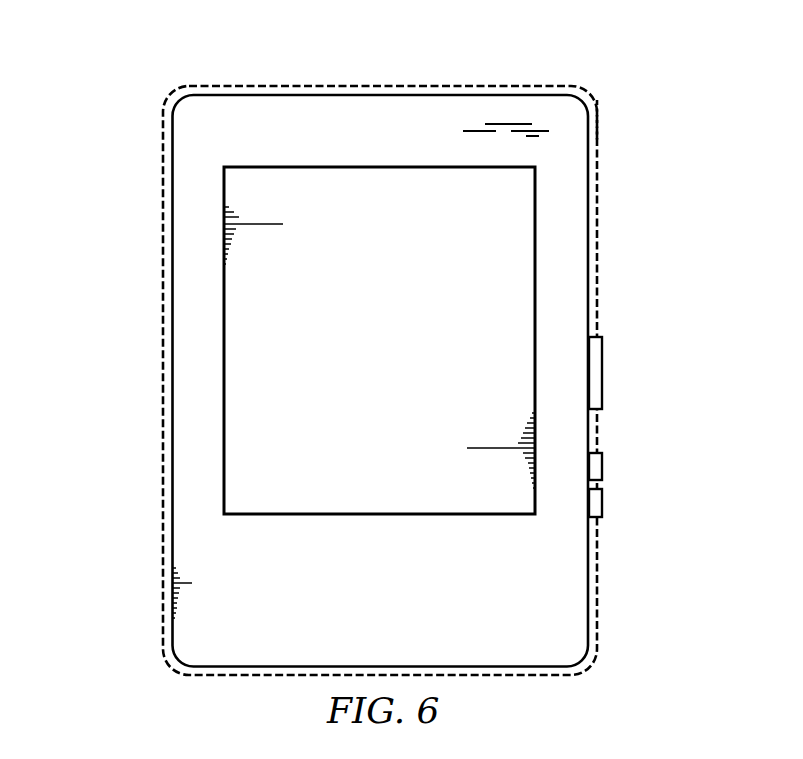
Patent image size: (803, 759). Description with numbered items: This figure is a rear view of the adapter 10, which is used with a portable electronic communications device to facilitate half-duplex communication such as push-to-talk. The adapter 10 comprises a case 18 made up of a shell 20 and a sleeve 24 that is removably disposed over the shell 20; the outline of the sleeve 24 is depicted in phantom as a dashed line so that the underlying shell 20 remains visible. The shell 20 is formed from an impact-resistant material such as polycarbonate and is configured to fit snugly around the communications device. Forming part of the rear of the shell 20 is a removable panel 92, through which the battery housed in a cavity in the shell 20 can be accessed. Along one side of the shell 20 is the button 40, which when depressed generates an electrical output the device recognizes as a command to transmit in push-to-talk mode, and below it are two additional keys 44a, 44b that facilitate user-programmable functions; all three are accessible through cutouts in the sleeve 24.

The adapter 10 is at (142, 67).
The case 18 is at (328, 87).
The sleeve 24 is at (598, 121).
The shell 20 is at (570, 604).
The removable panel 92 is at (508, 242).
The button 40 is at (603, 372).
The key 44a is at (603, 465).
The key 44b is at (603, 502).